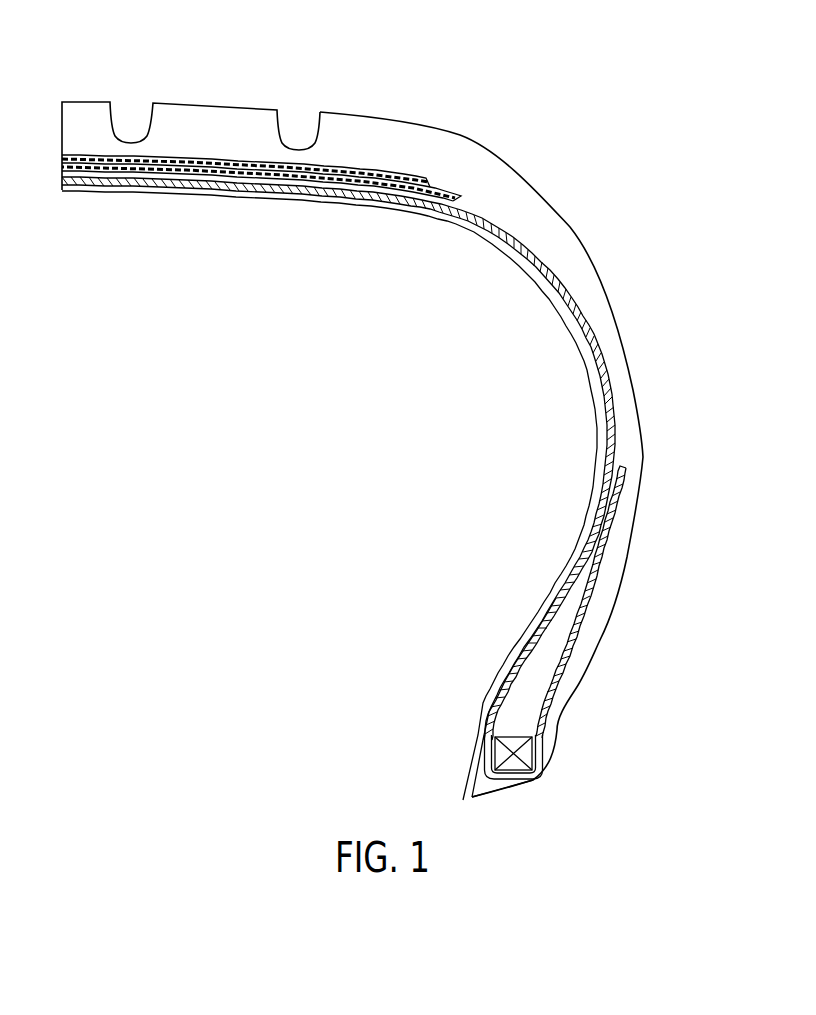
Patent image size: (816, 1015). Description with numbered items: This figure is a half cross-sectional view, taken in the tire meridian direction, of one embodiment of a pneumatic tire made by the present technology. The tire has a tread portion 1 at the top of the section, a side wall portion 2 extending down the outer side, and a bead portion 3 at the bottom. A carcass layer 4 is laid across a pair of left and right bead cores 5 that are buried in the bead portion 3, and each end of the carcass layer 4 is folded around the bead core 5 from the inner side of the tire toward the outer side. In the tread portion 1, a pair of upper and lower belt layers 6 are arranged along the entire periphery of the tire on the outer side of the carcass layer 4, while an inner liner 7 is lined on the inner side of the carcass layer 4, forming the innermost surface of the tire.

The tread portion 1 is at (225, 105).
The side wall portion 2 is at (634, 540).
The bead portion 3 is at (556, 760).
The carcass layer 4 is at (610, 370).
The bead core 5 is at (513, 764).
The belt layer 6 is at (443, 187).
The inner liner 7 is at (483, 715).